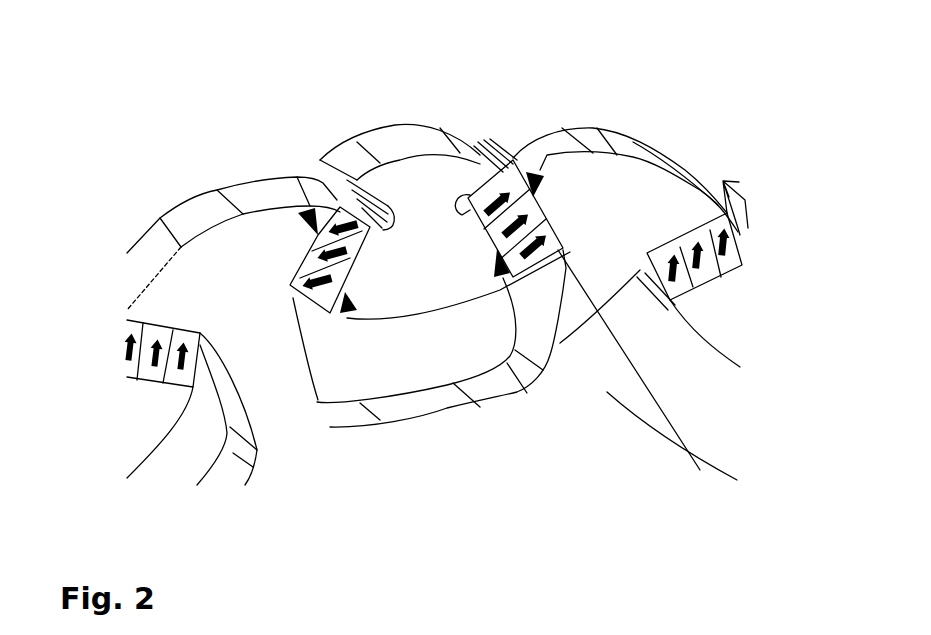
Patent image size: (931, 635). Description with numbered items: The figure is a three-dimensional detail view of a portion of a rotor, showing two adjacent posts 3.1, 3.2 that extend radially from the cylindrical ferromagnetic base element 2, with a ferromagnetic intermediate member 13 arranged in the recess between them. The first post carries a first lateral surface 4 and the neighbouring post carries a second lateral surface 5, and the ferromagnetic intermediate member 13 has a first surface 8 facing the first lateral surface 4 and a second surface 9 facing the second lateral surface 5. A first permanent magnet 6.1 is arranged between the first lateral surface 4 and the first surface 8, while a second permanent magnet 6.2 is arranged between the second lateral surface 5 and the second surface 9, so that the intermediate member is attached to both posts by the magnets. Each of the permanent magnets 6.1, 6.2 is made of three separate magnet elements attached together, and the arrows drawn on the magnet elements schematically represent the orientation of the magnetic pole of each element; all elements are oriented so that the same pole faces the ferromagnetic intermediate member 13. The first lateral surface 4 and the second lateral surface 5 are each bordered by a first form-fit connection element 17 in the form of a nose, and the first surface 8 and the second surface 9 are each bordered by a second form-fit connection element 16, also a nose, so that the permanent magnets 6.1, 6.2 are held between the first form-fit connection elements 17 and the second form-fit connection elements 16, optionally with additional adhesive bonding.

The ferromagnetic base element 2 is at (312, 458).
The first post 3.1 is at (212, 213).
The second post 3.2 is at (617, 158).
The first lateral surface 4 is at (300, 210).
The second lateral surface 5 is at (533, 174).
The first permanent magnet 6.1 is at (318, 236).
The second permanent magnet 6.2 is at (530, 218).
The first surface 8 is at (350, 307).
The second surface 9 is at (513, 277).
The ferromagnetic intermediate member 13 is at (397, 148).
The second form-fit connection element 16 is at (357, 198).
The first form-fit connection element 17 is at (335, 200).